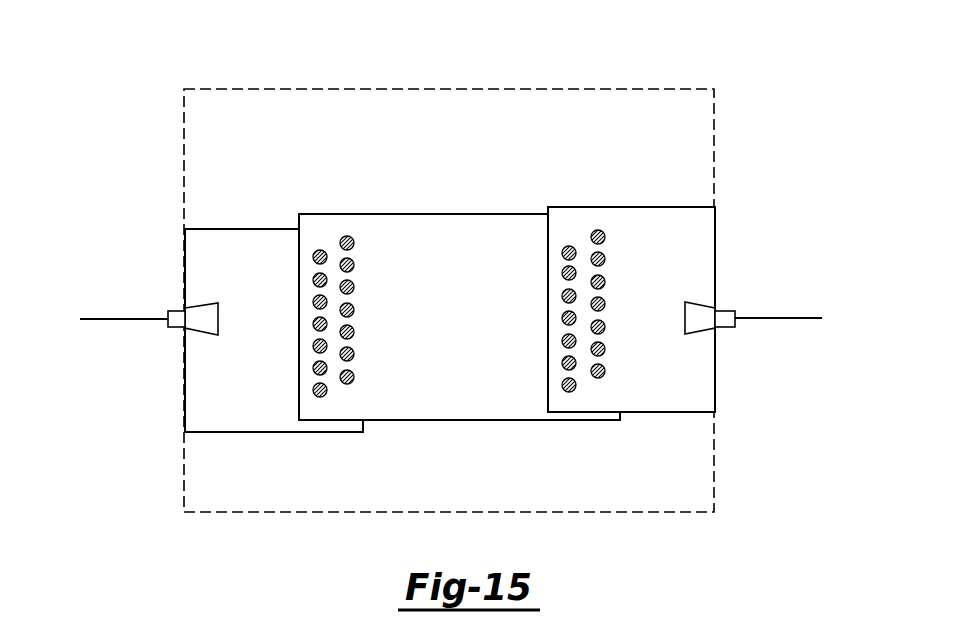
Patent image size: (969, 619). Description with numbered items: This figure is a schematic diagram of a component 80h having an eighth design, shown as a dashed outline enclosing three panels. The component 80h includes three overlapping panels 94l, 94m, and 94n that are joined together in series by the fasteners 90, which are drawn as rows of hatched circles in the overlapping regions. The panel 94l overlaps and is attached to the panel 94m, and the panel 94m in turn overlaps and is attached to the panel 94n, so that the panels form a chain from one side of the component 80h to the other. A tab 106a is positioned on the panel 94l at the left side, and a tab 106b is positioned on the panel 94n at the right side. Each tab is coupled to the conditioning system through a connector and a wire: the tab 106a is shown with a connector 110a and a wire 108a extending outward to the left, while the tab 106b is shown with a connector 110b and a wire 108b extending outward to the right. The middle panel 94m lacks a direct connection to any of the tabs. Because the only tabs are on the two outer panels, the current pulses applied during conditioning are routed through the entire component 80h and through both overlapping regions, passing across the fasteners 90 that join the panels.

The component 80h is at (304, 88).
The fasteners 90 is at (355, 243).
The panel 94l is at (299, 433).
The panel 94m is at (458, 421).
The panel 94n is at (673, 413).
The tab 106a is at (200, 308).
The tab 106b is at (700, 303).
The wire 108a is at (124, 318).
The wire 108b is at (795, 318).
The connector 110a is at (178, 329).
The connector 110b is at (728, 330).